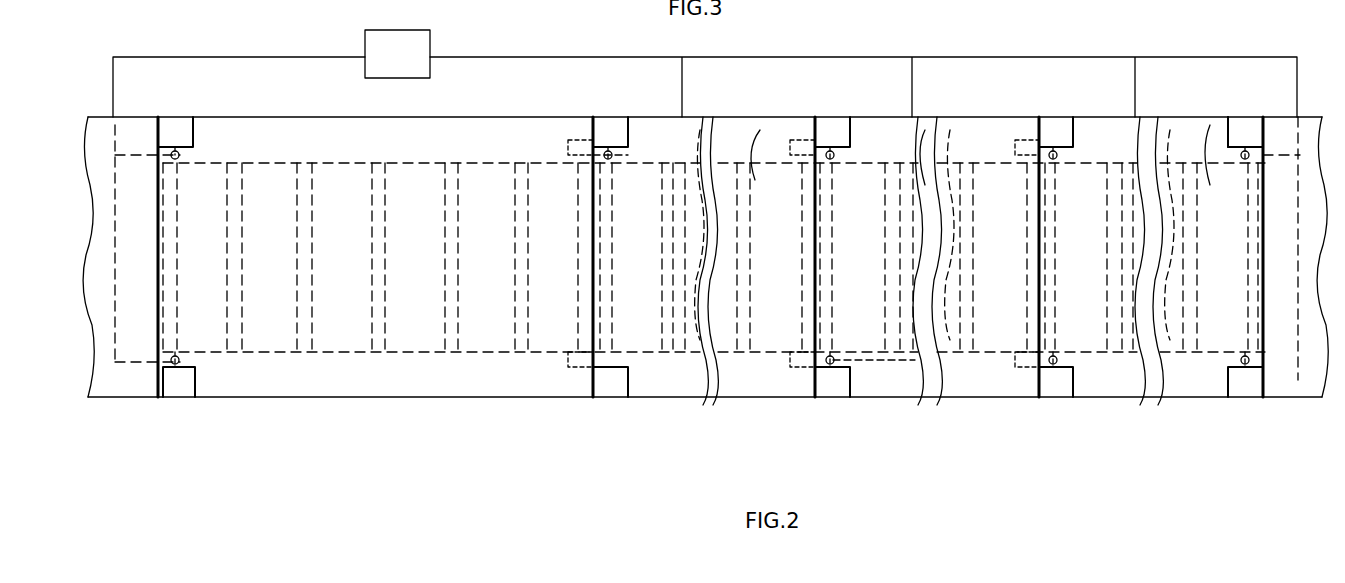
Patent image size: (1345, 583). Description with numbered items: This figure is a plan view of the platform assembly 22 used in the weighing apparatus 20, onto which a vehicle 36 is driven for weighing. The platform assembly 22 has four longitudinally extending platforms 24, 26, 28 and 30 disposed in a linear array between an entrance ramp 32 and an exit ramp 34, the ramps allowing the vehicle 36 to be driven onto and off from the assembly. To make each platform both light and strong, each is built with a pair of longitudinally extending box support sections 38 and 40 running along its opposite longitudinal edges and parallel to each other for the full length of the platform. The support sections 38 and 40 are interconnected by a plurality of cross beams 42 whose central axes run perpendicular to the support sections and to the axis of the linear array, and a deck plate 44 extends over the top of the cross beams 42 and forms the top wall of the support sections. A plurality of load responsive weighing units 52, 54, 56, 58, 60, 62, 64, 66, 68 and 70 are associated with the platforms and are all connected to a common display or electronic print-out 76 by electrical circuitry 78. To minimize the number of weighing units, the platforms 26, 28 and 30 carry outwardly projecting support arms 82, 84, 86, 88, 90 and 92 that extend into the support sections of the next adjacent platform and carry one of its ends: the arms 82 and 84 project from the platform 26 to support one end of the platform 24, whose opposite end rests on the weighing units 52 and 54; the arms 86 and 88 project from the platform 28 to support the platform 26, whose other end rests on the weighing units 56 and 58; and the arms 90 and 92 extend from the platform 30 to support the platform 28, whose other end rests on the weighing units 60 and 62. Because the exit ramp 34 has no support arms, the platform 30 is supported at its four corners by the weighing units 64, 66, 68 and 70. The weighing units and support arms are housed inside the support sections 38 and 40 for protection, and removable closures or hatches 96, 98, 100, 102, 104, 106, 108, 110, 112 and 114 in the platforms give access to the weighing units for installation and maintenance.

The weighing apparatus 20 is at (102, 78).
The platform assembly 22 is at (490, 435).
The platform 24 is at (360, 400).
The platform 26 is at (775, 400).
The platform 28 is at (995, 400).
The platform 30 is at (1205, 400).
The entrance ramp 32 is at (150, 296).
The exit ramp 34 is at (1285, 200).
The vehicle 36 is at (714, 257).
The box support section 38 is at (288, 160).
The box support section 40 is at (345, 355).
The cross beams 42 is at (290, 310).
The deck plate 44 is at (418, 175).
The weighing unit 52 is at (180, 362).
The weighing unit 54 is at (198, 148).
The weighing unit 56 is at (604, 375).
The weighing unit 58 is at (608, 148).
The weighing unit 60 is at (832, 360).
The weighing unit 62 is at (835, 150).
The weighing unit 64 is at (1056, 360).
The weighing unit 66 is at (1056, 150).
The weighing unit 68 is at (1245, 358).
The weighing unit 70 is at (1250, 148).
The display or electronic print-out 76 is at (418, 35).
The electrical circuitry 78 is at (522, 57).
The support arm 82 is at (568, 362).
The support arm 84 is at (570, 140).
The support arm 86 is at (798, 366).
The support arm 88 is at (790, 122).
The support arm 90 is at (1018, 360).
The support arm 92 is at (1018, 140).
The removable closure or hatch 96 is at (186, 372).
The removable closure or hatch 98 is at (170, 130).
The removable closure or hatch 100 is at (617, 385).
The removable closure or hatch 102 is at (612, 130).
The removable closure or hatch 104 is at (833, 387).
The removable closure or hatch 106 is at (826, 130).
The removable closure or hatch 108 is at (1060, 387).
The removable closure or hatch 110 is at (1050, 128).
The removable closure or hatch 112 is at (1240, 387).
The removable closure or hatch 114 is at (1243, 128).